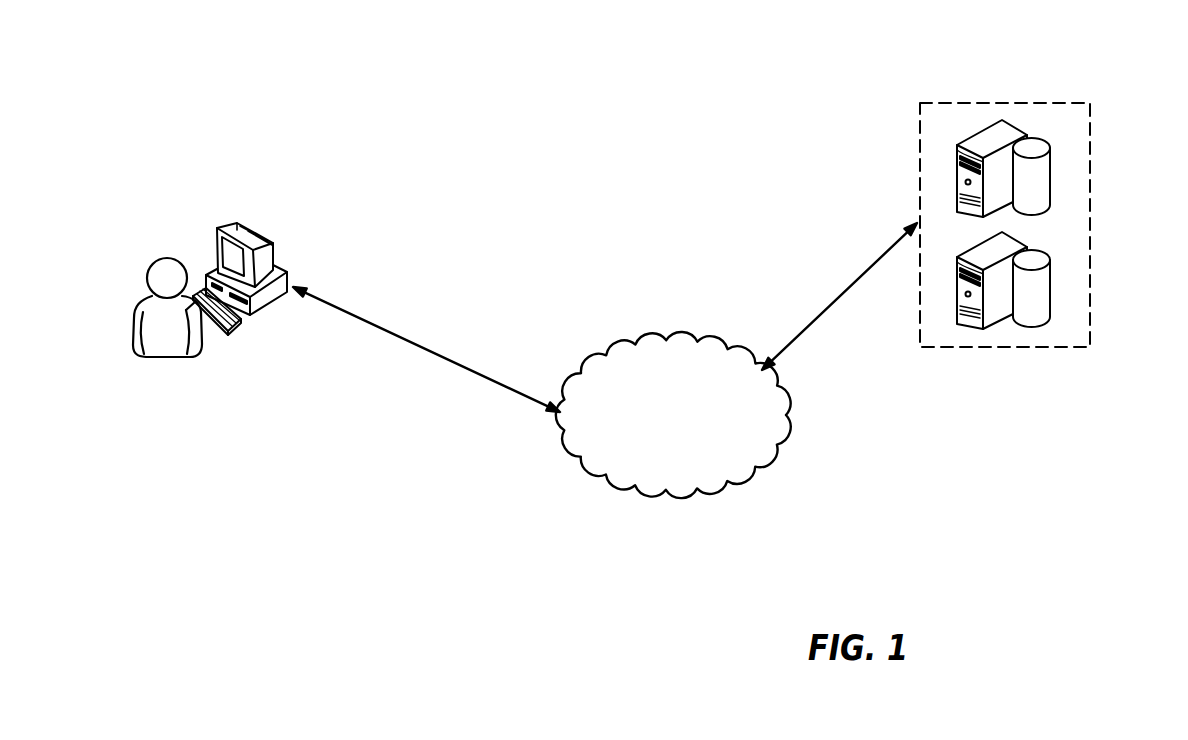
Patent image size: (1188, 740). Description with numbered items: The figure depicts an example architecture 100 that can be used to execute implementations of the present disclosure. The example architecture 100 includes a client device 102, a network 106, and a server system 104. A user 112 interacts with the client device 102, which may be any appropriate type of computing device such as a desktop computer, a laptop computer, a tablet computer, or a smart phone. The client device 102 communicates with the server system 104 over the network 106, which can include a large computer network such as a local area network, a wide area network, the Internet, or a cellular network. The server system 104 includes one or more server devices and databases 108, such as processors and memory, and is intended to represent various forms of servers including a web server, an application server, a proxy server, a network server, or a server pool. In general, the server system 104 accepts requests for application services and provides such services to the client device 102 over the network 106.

The example architecture 100 is at (527, 102).
The client device 102 is at (215, 232).
The server system 104 is at (1090, 226).
The network 106 is at (678, 340).
The server devices and databases 108 is at (957, 167).
The user 112 is at (167, 358).